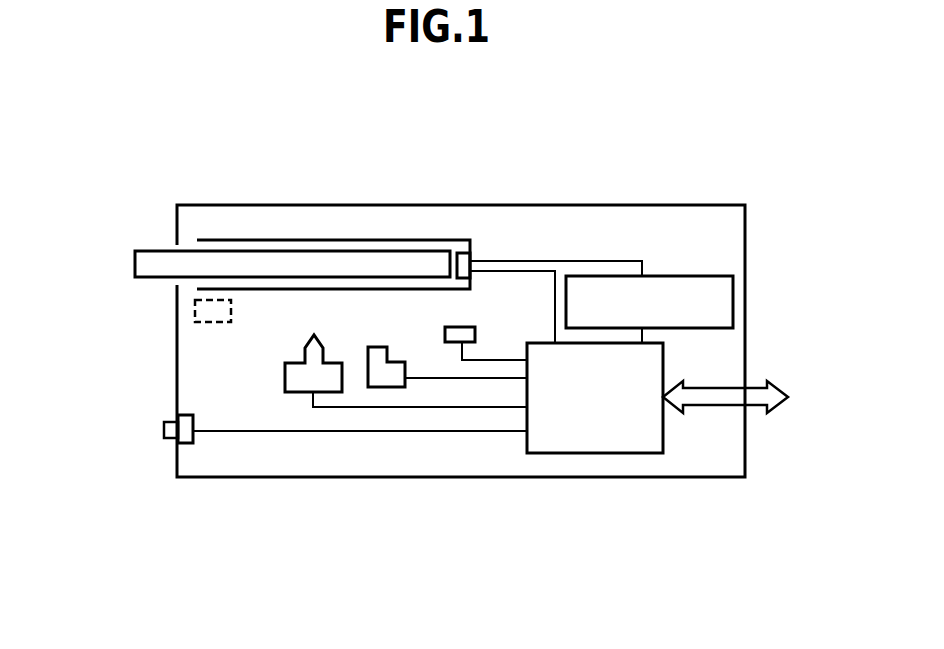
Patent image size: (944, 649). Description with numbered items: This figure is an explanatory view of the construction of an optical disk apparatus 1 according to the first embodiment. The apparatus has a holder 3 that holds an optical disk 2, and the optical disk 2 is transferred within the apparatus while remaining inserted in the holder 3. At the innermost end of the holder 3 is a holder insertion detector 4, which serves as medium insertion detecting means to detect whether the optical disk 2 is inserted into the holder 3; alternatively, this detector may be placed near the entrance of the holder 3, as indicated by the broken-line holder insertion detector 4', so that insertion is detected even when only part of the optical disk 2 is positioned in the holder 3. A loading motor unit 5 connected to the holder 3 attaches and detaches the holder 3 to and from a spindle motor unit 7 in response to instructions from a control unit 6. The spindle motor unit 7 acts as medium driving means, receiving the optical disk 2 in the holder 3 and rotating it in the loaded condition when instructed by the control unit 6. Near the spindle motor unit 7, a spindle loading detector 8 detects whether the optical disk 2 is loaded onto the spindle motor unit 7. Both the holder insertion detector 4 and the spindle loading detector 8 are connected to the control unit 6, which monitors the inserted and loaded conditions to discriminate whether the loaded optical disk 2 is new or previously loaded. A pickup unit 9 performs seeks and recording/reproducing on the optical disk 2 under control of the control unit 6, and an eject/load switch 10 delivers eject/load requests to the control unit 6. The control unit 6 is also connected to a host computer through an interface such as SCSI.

The optical disk apparatus 1 is at (660, 194).
The optical disk 2 is at (213, 262).
The holder 3 is at (352, 243).
The holder insertion detector 4 is at (549, 213).
The holder insertion detector 4' is at (167, 332).
The loading motor unit 5 is at (733, 301).
The control unit 6 is at (647, 453).
The spindle motor unit 7 is at (290, 392).
The spindle loading detector 8 is at (448, 345).
The pickup unit 9 is at (380, 387).
The eject/load switch 10 is at (164, 430).